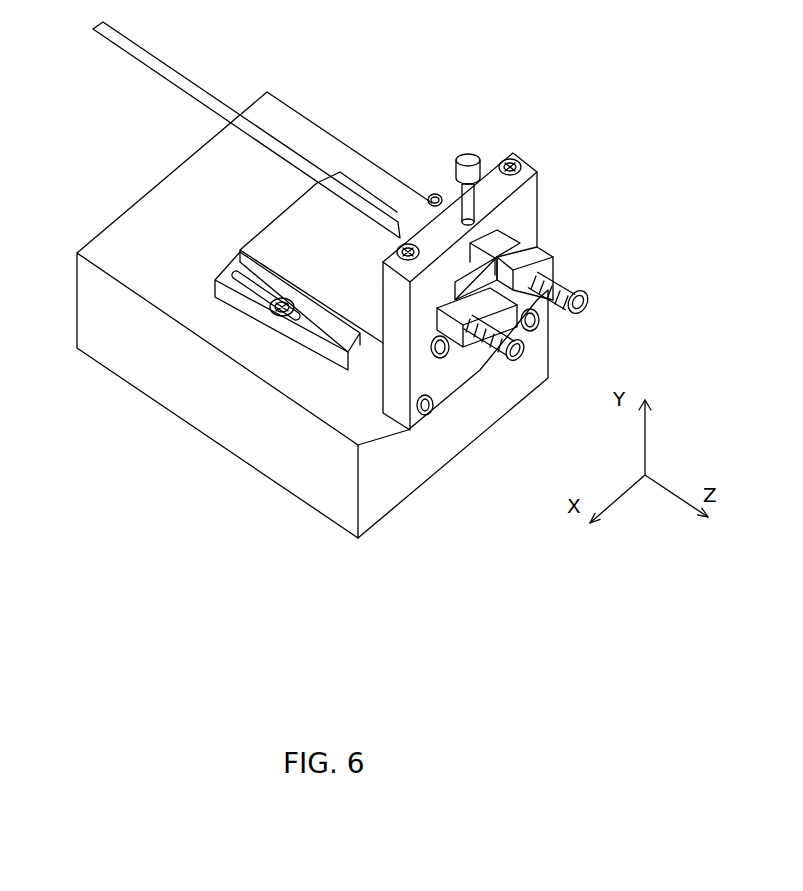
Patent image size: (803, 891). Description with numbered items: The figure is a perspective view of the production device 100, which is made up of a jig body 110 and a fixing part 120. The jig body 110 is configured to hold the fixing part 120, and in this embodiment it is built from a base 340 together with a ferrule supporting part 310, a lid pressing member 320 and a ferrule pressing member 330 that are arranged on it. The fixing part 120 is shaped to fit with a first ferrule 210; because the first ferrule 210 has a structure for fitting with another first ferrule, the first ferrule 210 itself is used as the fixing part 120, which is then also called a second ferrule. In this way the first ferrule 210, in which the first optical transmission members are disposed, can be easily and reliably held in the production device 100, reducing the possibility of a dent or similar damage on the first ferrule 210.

The production device 100 is at (500, 93).
The jig body 110 is at (376, 106).
The fixing part 120 is at (577, 240).
The first ferrule 210 is at (495, 258).
The ferrule supporting part 310 is at (553, 255).
The lid pressing member 320 is at (532, 197).
The ferrule pressing member 330 is at (550, 306).
The base 340 is at (173, 367).